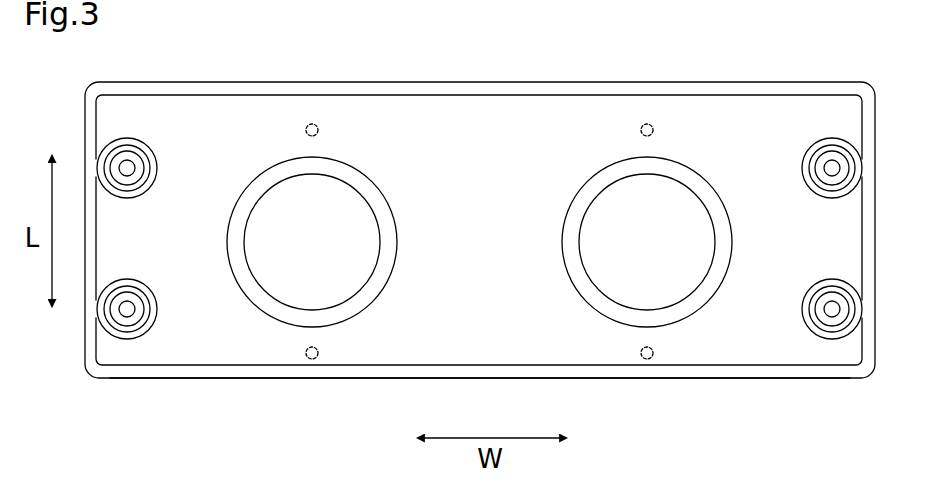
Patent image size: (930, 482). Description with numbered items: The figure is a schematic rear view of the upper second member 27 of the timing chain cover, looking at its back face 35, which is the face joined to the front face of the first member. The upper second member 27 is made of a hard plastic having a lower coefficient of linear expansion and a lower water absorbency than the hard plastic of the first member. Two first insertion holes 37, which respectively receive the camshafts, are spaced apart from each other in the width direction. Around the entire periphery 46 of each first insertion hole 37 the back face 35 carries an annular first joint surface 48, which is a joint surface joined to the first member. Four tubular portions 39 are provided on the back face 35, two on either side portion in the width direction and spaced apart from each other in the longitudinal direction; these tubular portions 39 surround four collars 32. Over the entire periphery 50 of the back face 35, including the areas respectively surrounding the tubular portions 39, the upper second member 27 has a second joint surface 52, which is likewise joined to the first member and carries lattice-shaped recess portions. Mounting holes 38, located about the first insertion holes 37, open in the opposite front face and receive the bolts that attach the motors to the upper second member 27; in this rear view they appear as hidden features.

The upper second member 27 is at (770, 80).
The second joint surface 52 is at (840, 84).
The back face 35 is at (848, 257).
The periphery 50 is at (492, 379).
The tubular portion 39 is at (146, 153).
The collar 32 is at (127, 182).
The periphery of first insertion hole 46 is at (281, 148).
The first joint surface 48 is at (388, 215).
The first insertion hole 37 is at (378, 254).
The mounting hole 38 is at (320, 129).